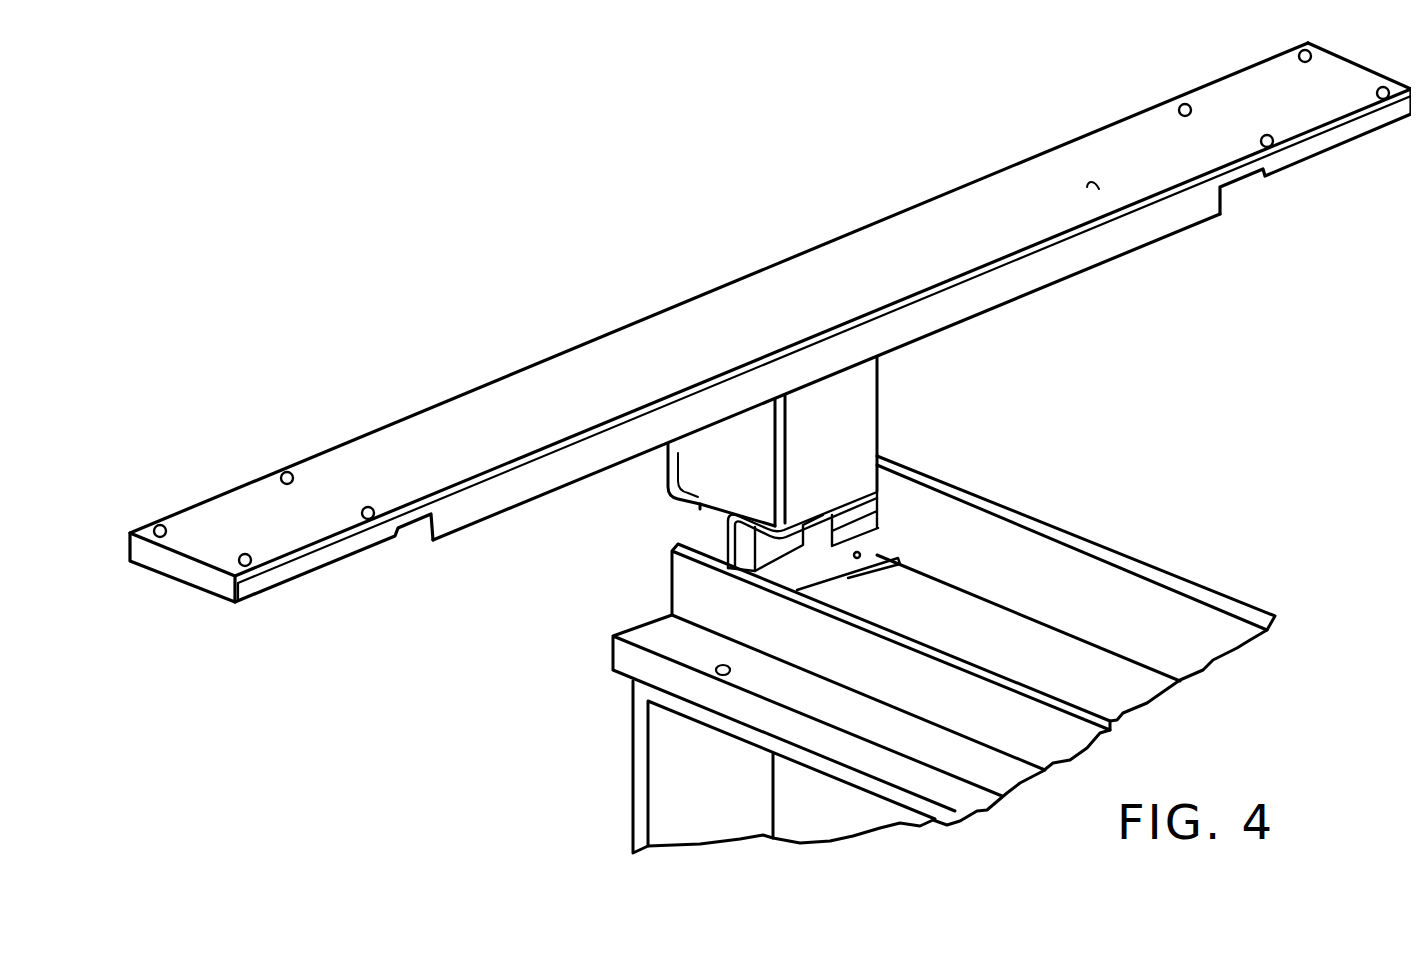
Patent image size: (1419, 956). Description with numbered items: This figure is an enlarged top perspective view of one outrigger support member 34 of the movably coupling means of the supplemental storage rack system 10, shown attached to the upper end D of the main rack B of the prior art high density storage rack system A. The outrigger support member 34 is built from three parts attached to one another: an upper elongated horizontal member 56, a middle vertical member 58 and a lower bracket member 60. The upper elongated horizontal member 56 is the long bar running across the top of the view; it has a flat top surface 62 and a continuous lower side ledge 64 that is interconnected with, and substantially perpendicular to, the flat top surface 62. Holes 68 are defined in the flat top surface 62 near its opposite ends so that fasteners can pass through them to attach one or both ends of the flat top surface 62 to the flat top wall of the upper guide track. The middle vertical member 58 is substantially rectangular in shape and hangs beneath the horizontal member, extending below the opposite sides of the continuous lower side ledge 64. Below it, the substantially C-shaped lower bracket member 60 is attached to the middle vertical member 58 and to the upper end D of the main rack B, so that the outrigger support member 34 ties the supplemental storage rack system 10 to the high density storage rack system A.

The supplemental storage rack system 10 is at (770, 328).
The outrigger support member 34 is at (965, 183).
The upper elongated horizontal member 56 is at (840, 234).
The middle vertical member 58 is at (878, 415).
The lower bracket member 60 is at (845, 520).
The flat top surface 62 is at (1097, 185).
The continuous lower side ledge 64 is at (545, 480).
The holes 68 is at (281, 473).
The high density storage rack system A is at (963, 654).
The main rack B is at (1138, 693).
The upper end D is at (1055, 645).